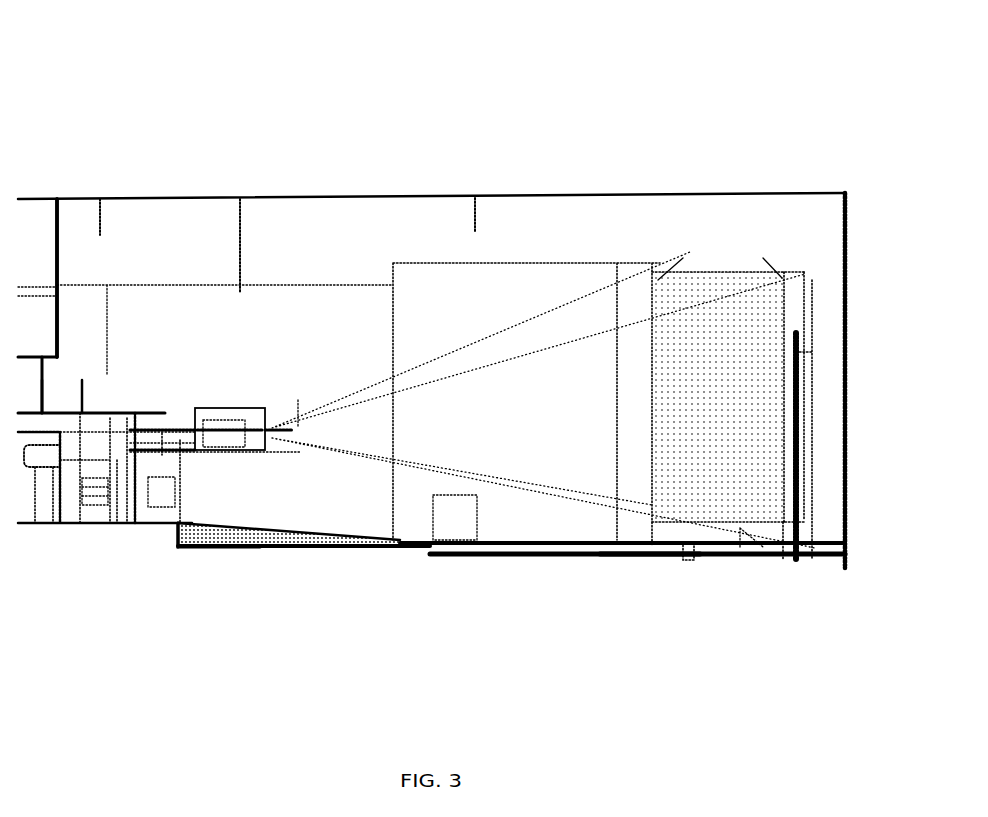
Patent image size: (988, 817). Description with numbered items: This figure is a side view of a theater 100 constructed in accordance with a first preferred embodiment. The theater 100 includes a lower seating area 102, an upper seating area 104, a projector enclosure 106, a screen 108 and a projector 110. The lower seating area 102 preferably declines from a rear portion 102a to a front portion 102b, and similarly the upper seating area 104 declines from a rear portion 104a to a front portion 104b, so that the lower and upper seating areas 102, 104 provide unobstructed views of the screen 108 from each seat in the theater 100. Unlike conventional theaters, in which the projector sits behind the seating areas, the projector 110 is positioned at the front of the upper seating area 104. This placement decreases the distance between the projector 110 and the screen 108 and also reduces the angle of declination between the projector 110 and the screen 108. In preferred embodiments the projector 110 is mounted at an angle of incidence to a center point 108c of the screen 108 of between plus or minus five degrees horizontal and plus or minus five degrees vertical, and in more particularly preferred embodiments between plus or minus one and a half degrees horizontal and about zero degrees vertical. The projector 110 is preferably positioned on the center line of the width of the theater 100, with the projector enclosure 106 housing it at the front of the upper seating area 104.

The theater 100 is at (361, 158).
The lower seating area 102 is at (322, 527).
The rear portion 102a is at (202, 523).
The front portion 102b is at (646, 548).
The upper seating area 104 is at (176, 416).
The rear portion 104a is at (86, 410).
The front portion 104b is at (278, 430).
The projector enclosure 106 is at (265, 450).
The screen 108 is at (723, 300).
The center point 108c is at (778, 403).
The projector 110 is at (223, 425).